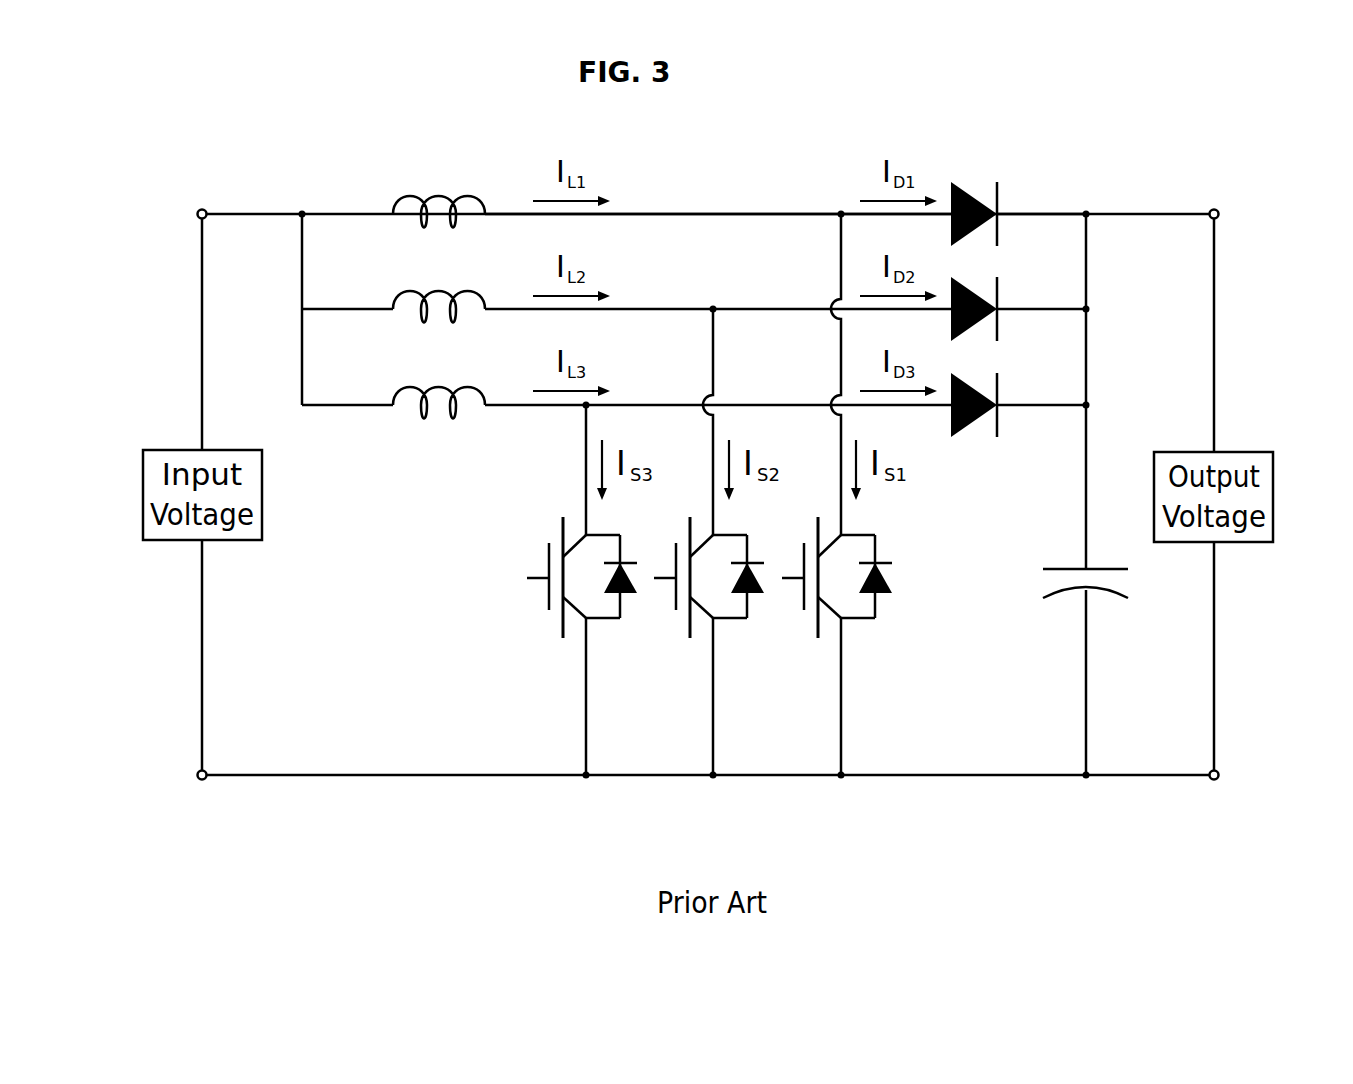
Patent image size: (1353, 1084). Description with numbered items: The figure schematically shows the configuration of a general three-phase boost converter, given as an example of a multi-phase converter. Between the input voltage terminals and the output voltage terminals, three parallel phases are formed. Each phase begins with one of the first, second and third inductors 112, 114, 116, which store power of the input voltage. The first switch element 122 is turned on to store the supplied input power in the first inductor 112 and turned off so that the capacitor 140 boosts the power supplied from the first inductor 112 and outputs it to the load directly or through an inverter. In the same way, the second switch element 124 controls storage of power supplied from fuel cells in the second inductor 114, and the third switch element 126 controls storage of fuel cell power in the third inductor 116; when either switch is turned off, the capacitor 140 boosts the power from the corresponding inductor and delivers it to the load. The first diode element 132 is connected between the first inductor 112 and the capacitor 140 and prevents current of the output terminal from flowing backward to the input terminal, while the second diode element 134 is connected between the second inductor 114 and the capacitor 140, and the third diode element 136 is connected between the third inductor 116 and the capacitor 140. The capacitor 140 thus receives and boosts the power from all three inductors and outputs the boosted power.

The first inductor 112 is at (440, 197).
The second inductor 114 is at (410, 290).
The third inductor 116 is at (453, 420).
The first switch element 122 is at (804, 610).
The second switch element 124 is at (676, 610).
The third switch element 126 is at (549, 610).
The first diode element 132 is at (973, 200).
The second diode element 134 is at (973, 300).
The third diode element 136 is at (977, 422).
The capacitor 140 is at (1093, 567).